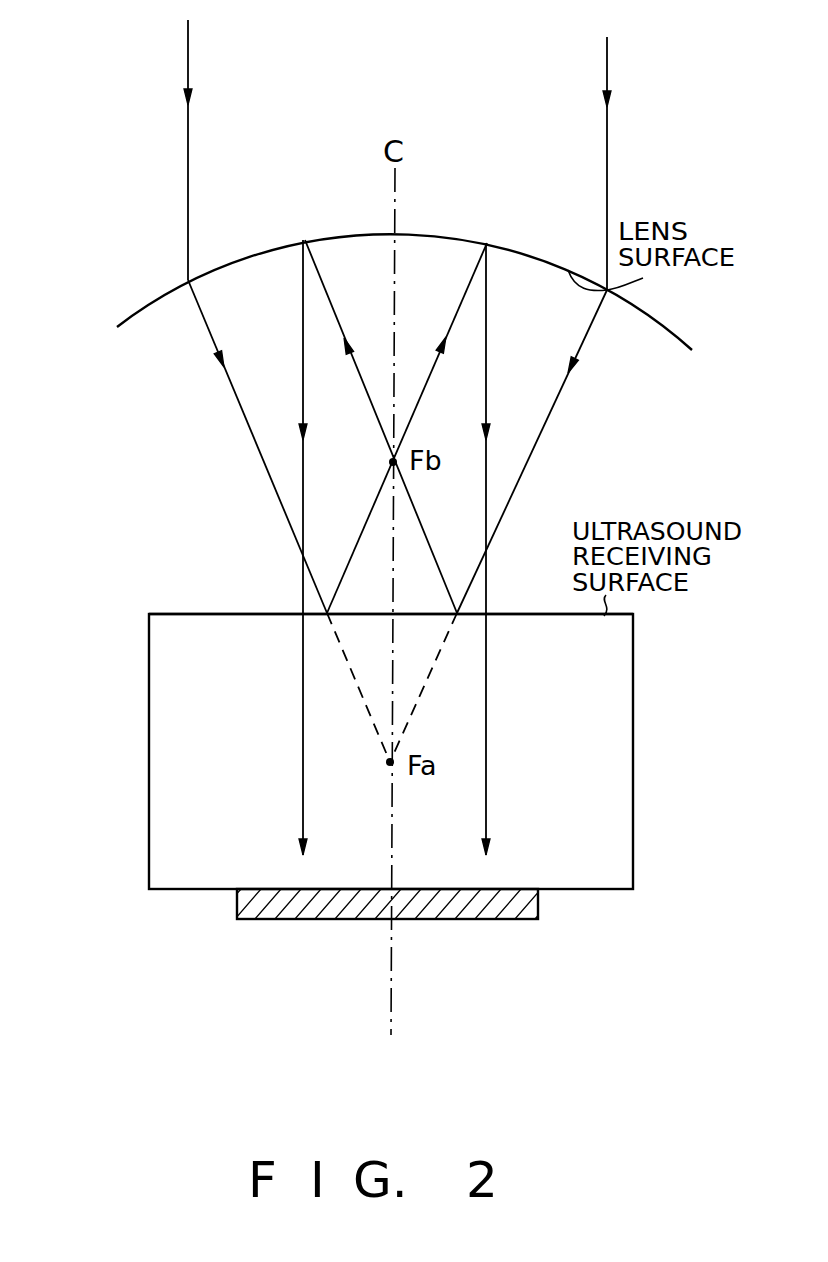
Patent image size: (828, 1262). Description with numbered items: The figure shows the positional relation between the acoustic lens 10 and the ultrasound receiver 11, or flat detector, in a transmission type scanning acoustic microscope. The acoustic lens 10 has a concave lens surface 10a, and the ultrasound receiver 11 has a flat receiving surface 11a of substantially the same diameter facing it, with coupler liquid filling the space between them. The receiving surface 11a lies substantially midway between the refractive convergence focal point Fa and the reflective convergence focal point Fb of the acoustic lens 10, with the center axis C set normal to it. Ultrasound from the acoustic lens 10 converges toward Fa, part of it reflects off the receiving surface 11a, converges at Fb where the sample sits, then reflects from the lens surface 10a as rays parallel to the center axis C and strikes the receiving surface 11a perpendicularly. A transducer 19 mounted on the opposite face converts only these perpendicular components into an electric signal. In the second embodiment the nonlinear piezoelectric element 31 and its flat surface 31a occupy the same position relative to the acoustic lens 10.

The acoustic lens 10 is at (404, 322).
The lens surface 10a is at (145, 306).
The ultrasound receiver 11 is at (443, 725).
The receiving surface 11a is at (202, 612).
The nonlinear piezoelectric element 31 is at (443, 725).
The flat surface 31a is at (391, 587).
The transducer 19 is at (513, 920).